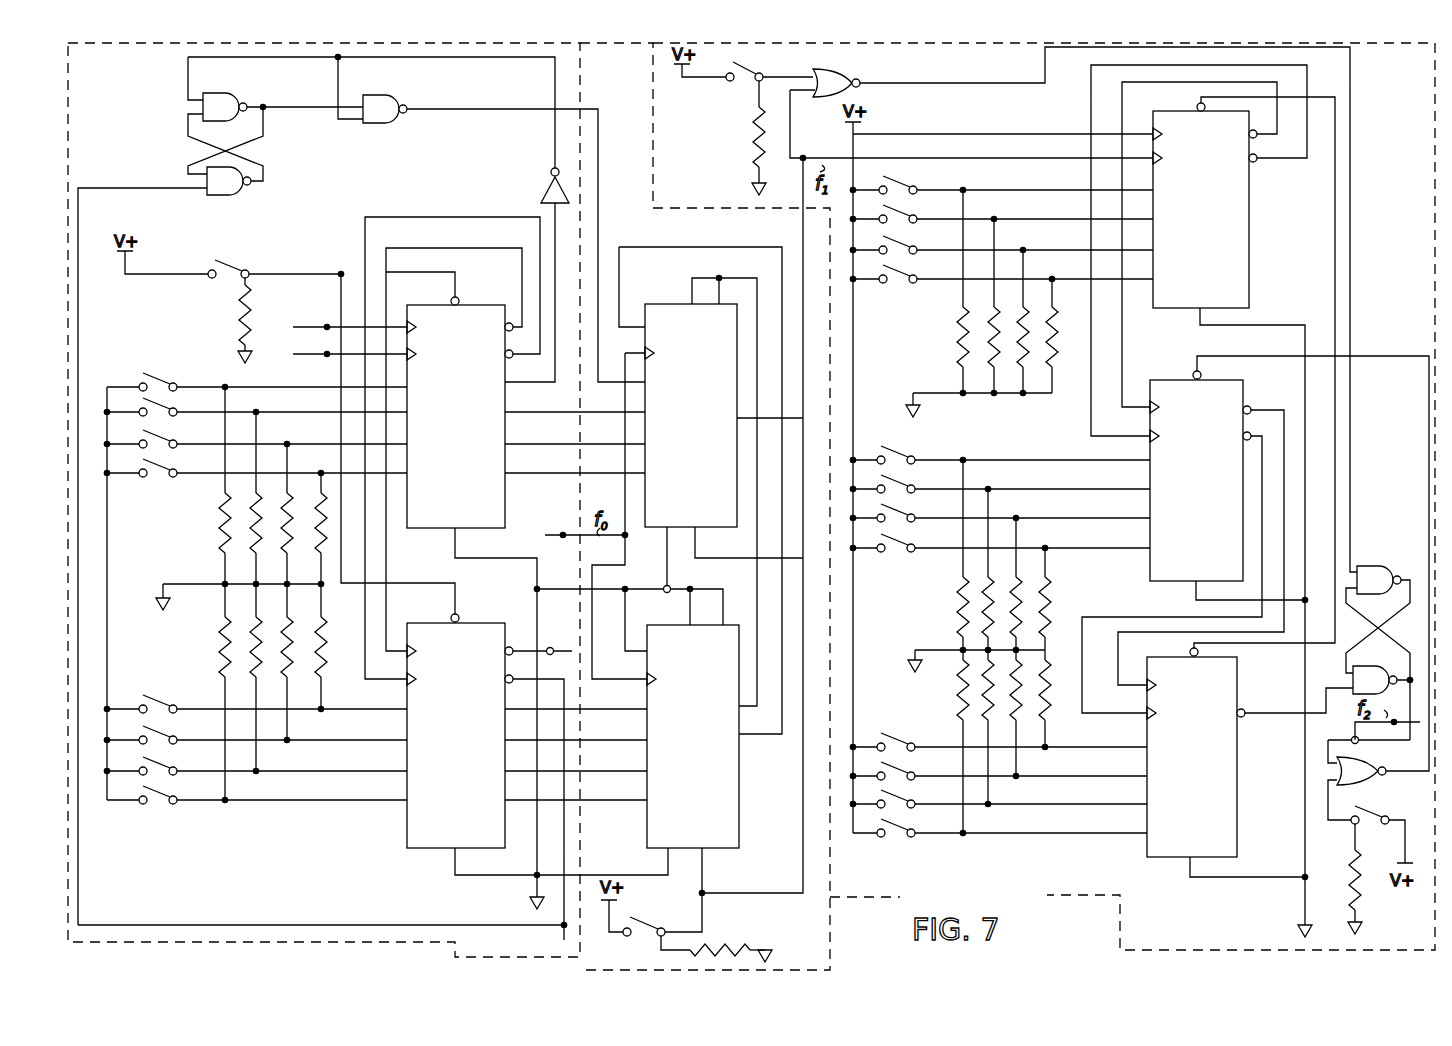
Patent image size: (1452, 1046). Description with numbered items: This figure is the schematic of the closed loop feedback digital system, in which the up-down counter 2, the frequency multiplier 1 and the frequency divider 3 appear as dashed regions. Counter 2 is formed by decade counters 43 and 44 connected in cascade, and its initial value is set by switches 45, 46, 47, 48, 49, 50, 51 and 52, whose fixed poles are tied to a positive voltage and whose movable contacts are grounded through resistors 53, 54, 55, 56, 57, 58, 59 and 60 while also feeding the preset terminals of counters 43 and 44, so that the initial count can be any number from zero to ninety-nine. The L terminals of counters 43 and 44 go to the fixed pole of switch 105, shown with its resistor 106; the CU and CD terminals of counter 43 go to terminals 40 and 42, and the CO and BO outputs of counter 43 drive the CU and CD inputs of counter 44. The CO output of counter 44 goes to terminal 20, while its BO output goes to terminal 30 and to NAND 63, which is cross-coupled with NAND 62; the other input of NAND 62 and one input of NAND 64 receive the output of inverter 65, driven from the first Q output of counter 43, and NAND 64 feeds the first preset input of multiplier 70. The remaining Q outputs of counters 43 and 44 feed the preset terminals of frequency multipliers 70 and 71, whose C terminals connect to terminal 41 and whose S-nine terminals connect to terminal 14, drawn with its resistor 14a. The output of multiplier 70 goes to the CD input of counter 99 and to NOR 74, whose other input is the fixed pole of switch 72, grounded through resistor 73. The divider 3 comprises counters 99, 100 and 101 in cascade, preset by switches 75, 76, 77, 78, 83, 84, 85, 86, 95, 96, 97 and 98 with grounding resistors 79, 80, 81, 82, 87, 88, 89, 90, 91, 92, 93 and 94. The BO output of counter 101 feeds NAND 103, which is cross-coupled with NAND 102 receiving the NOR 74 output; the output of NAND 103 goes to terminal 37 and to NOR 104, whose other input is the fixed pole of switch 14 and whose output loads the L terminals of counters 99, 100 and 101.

The frequency multiplier 1 is at (740, 506).
The up-down type counter 2 is at (402, 937).
The frequency divider 3 is at (1105, 905).
The switch 14 is at (645, 923).
The resistor 14a is at (722, 946).
The terminal 20 is at (550, 648).
The terminal 30 is at (560, 928).
The terminal 37 is at (1350, 739).
The terminal 40 is at (326, 325).
The terminal 41 is at (563, 533).
The terminal 42 is at (327, 358).
The counter 43 is at (504, 512).
The counter 44 is at (476, 630).
The switch 45 is at (163, 378).
The switch 46 is at (170, 408).
The switch 47 is at (170, 440).
The switch 48 is at (170, 469).
The switch 49 is at (170, 701).
The switch 50 is at (170, 731).
The switch 51 is at (170, 761).
The switch 52 is at (170, 790).
The resistor 53 is at (221, 537).
The resistor 54 is at (254, 556).
The resistor 55 is at (285, 556).
The resistor 56 is at (318, 556).
The resistor 57 is at (221, 632).
The resistor 58 is at (252, 636).
The resistor 59 is at (283, 636).
The resistor 60 is at (323, 641).
The NAND 62 is at (225, 98).
The NAND 63 is at (227, 196).
The NAND 64 is at (389, 99).
The inverter 65 is at (548, 189).
The frequency multiplier 70 is at (659, 302).
The frequency multiplier 71 is at (738, 810).
The switch 72 is at (748, 68).
The resistor 73 is at (752, 147).
The NOR 74 is at (846, 83).
The switch 75 is at (893, 180).
The switch 76 is at (901, 210).
The switch 77 is at (901, 240).
The switch 78 is at (901, 270).
The resistor 79 is at (956, 323).
The resistor 80 is at (990, 312).
The resistor 81 is at (1019, 312).
The resistor 82 is at (1056, 316).
The switch 83 is at (900, 450).
The switch 84 is at (900, 480).
The switch 85 is at (900, 509).
The switch 86 is at (900, 539).
The resistor 87 is at (956, 586).
The resistor 88 is at (982, 584).
The resistor 89 is at (1010, 584).
The resistor 90 is at (1049, 584).
The resistor 91 is at (956, 682).
The resistor 92 is at (990, 714).
The resistor 93 is at (1018, 686).
The resistor 94 is at (1048, 700).
The switch 95 is at (898, 738).
The switch 96 is at (900, 767).
The switch 97 is at (900, 795).
The switch 98 is at (900, 824).
The counter 99 is at (1249, 252).
The counter 100 is at (1246, 396).
The counter 101 is at (1232, 808).
The NAND 102 is at (1381, 561).
The NAND 103 is at (1386, 670).
The NOR 104 is at (1372, 786).
The switch 105 is at (233, 266).
The resistor 106 is at (240, 322).